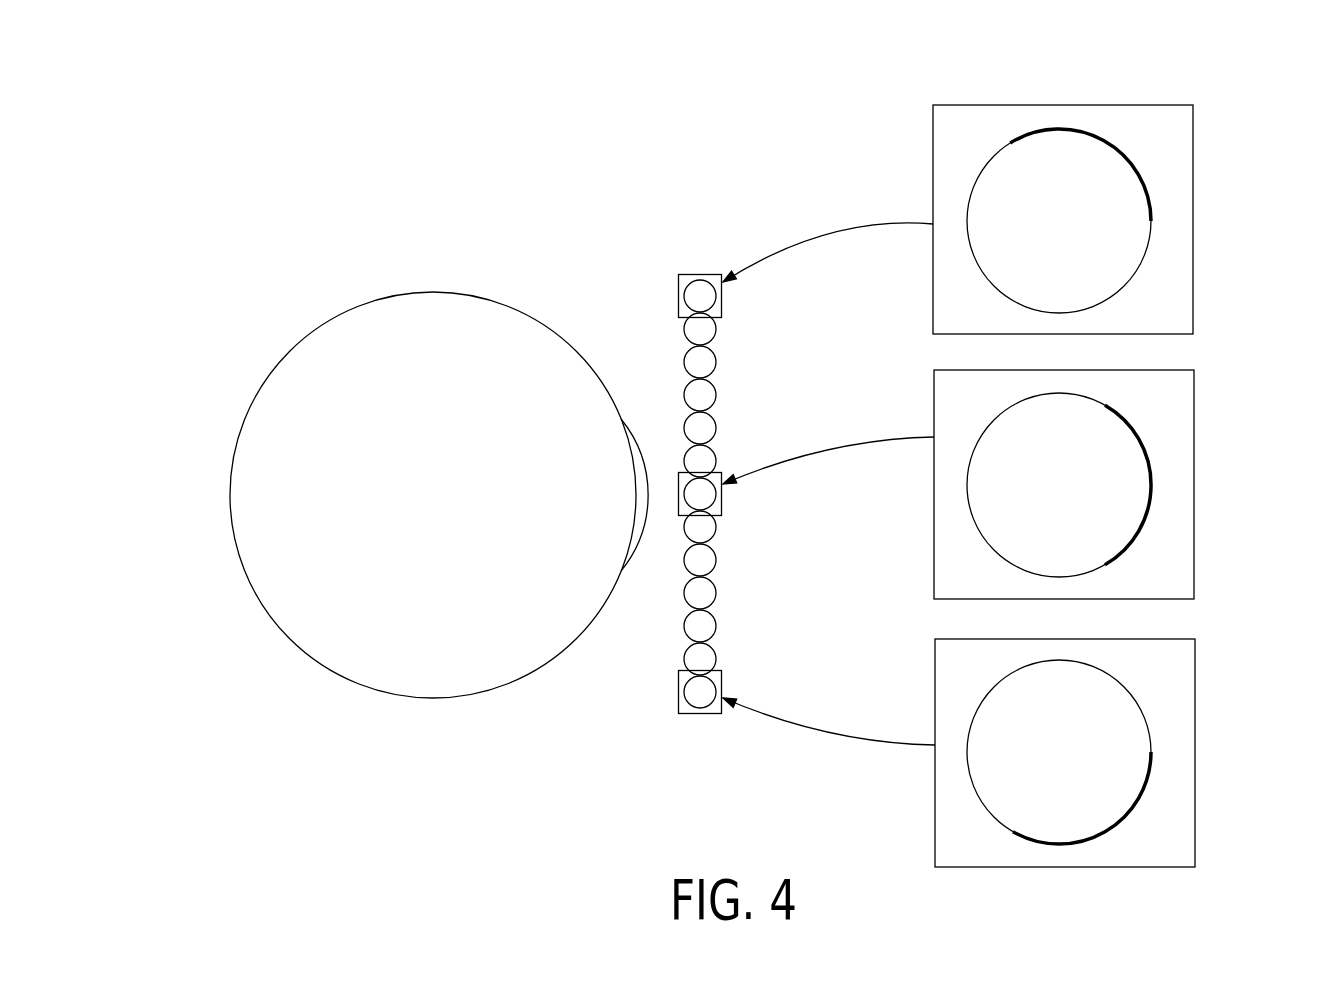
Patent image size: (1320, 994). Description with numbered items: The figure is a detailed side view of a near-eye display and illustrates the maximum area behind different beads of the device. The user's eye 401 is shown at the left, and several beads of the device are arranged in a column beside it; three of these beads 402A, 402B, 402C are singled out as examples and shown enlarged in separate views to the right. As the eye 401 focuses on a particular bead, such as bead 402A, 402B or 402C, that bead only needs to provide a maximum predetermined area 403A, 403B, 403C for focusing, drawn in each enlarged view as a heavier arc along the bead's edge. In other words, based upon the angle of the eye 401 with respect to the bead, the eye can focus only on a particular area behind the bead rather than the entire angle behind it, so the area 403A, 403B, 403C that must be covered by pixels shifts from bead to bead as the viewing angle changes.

The eye 401 is at (410, 280).
The bead 402A is at (1185, 209).
The bead 402B is at (1185, 452).
The bead 402C is at (1184, 756).
The maximum predetermined area 403A is at (1069, 123).
The maximum predetermined area 403B is at (1129, 427).
The maximum predetermined area 403C is at (1139, 779).